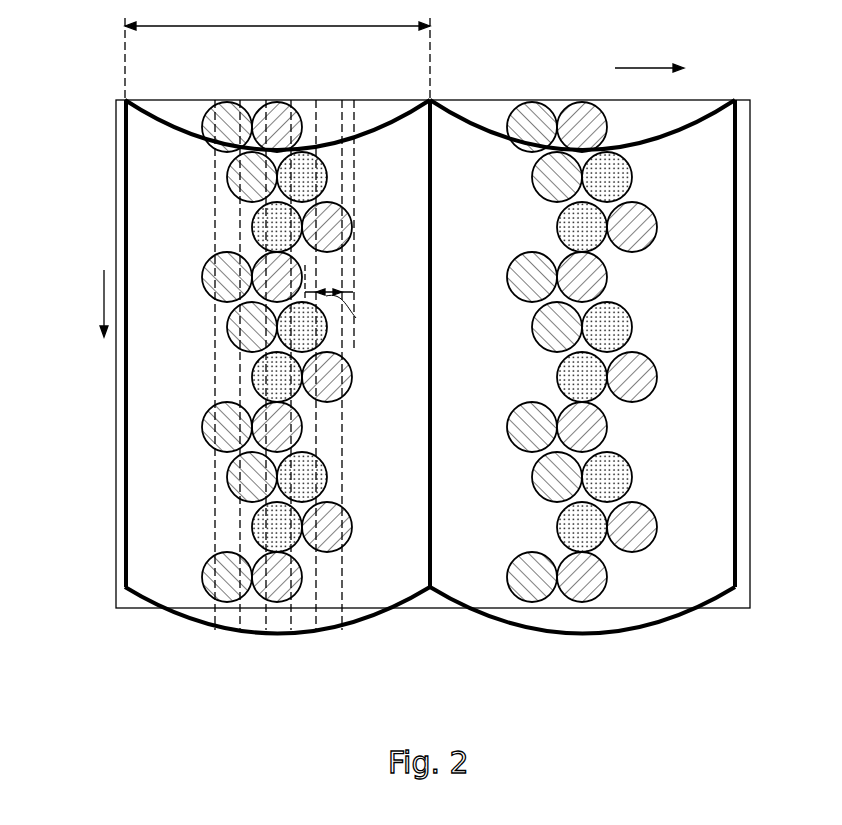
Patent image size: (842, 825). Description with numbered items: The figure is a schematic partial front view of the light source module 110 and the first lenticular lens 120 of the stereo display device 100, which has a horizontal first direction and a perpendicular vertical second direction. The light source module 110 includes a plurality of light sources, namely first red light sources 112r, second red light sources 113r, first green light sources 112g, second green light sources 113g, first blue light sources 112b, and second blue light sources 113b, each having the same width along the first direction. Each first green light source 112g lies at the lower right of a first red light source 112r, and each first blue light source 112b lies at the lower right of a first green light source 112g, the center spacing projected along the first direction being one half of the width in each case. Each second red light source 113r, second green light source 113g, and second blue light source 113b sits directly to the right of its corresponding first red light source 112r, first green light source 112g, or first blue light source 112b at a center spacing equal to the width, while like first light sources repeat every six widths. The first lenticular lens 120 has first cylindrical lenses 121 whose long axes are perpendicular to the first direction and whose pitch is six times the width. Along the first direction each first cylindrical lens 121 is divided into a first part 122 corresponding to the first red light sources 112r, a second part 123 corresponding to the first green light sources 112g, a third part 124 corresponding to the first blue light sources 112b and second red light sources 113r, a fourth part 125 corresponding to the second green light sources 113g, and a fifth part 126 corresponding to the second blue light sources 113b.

The stereo display device 100 is at (98, 39).
The light source module 110 is at (162, 100).
The first red light sources 112r is at (227, 103).
The first green light sources 112g is at (235, 178).
The first blue light sources 112b is at (270, 228).
The second red light sources 113r is at (276, 104).
The second green light sources 113g is at (310, 176).
The second blue light sources 113b is at (340, 225).
The first lenticular lens 120 is at (160, 604).
The first cylindrical lenses 121 is at (287, 419).
The first part 122 is at (228, 622).
The second part 123 is at (255, 620).
The third part 124 is at (278, 620).
The fourth part 125 is at (303, 620).
The fifth part 126 is at (368, 395).